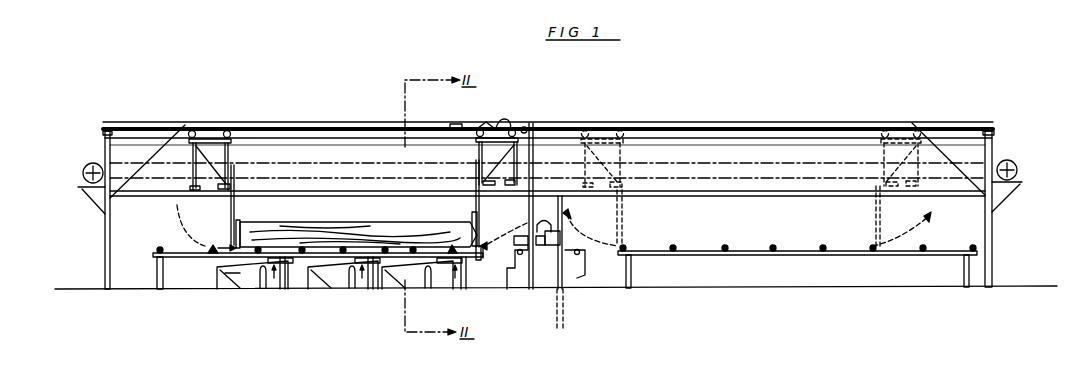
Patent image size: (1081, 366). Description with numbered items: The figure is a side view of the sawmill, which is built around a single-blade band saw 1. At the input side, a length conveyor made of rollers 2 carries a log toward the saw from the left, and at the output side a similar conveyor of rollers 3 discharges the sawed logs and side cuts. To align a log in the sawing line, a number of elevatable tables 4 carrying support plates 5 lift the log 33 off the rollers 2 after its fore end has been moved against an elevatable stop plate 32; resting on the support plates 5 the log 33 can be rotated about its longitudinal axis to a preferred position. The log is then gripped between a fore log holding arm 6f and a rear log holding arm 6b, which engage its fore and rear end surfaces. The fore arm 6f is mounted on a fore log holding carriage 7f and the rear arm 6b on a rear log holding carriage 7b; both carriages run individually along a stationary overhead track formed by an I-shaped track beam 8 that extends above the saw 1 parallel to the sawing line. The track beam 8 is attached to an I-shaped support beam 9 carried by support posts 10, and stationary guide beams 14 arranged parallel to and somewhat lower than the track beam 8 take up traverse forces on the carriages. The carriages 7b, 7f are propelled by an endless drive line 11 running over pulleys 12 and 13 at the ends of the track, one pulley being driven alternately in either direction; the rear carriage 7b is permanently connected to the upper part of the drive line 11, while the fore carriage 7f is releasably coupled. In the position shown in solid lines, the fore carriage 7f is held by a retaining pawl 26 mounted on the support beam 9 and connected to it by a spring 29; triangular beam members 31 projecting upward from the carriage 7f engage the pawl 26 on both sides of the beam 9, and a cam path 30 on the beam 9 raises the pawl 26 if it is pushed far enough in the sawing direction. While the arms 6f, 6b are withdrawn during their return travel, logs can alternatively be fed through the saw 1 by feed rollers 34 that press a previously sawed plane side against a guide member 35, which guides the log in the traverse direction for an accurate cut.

The single-blade band saw 1 is at (562, 278).
The rollers 2 is at (160, 253).
The rollers 3 is at (673, 253).
The elevatable tables 4 is at (276, 262).
The support plates 5 is at (285, 262).
The rear log holding arm 6b is at (235, 226).
The fore log holding arm 6f is at (476, 220).
The rear log holding carriage 7b is at (190, 165).
The fore log holding carriage 7f is at (476, 160).
The track beam 8 is at (792, 138).
The support beam 9 is at (768, 122).
The support posts 10 is at (105, 253).
The endless drive line 11 is at (760, 163).
The pulley 12 is at (1015, 164).
The pulley 13 is at (86, 165).
The guide beams 14 is at (755, 196).
The retaining pawl 26 is at (504, 120).
The spring 29 is at (458, 124).
The cam path 30 is at (525, 127).
The triangular beam members 31 is at (484, 122).
The elevatable stop plate 32 is at (480, 262).
The log 33 is at (405, 222).
The feed rollers 34 is at (547, 228).
The guide member 35 is at (525, 240).